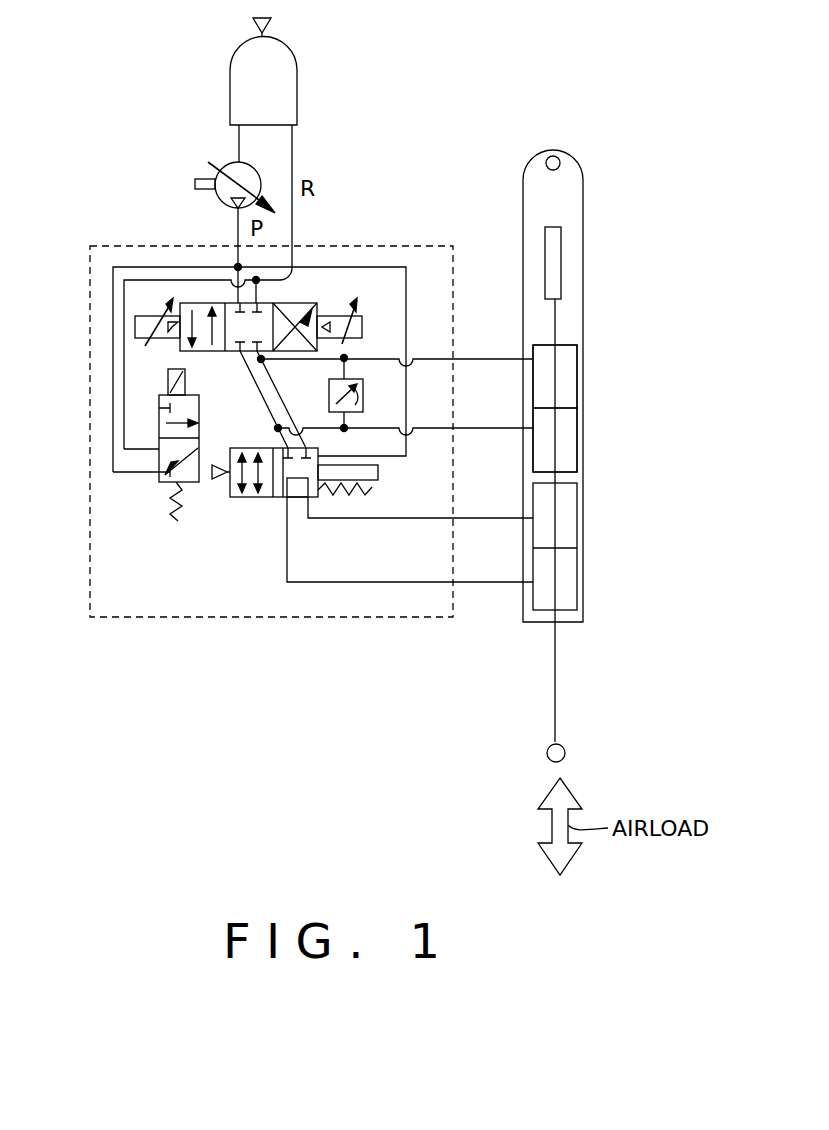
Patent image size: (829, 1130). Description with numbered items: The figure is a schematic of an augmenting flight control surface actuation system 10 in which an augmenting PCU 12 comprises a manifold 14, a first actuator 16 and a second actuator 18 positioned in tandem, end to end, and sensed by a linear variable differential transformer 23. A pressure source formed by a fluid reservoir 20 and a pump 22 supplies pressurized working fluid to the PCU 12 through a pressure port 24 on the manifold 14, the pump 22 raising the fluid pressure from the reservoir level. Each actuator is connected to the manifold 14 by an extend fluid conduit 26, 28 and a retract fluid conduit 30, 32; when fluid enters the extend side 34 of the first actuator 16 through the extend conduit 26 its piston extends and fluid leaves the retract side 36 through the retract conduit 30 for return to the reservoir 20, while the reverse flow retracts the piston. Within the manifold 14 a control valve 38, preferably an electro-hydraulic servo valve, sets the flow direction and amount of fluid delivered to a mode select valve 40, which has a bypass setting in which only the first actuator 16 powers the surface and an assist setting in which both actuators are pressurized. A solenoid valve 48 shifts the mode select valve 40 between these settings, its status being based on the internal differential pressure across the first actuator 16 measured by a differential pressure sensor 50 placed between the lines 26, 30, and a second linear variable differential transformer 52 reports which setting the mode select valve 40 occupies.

The augmenting flight control surface actuation system 10 is at (158, 125).
The augmenting PCU 12 is at (521, 282).
The manifold 14 is at (257, 606).
The first actuator 16 is at (577, 360).
The second actuator 18 is at (577, 510).
The fluid reservoir 20 is at (297, 78).
The pump 22 is at (217, 198).
The linear variable differential transformer 23 is at (561, 269).
The pressure port 24 is at (236, 263).
The extend fluid conduit 26 is at (468, 358).
The extend fluid conduit 28 is at (468, 518).
The retract fluid conduit 30 is at (468, 428).
The retract fluid conduit 32 is at (503, 582).
The extend side 34 is at (577, 395).
The retract side 36 is at (577, 455).
The control valve 38 is at (297, 304).
The mode select valve 40 is at (250, 497).
The solenoid valve 48 is at (158, 476).
The differential pressure sensor 50 is at (364, 391).
The linear variable differential transformer 52 is at (378, 472).